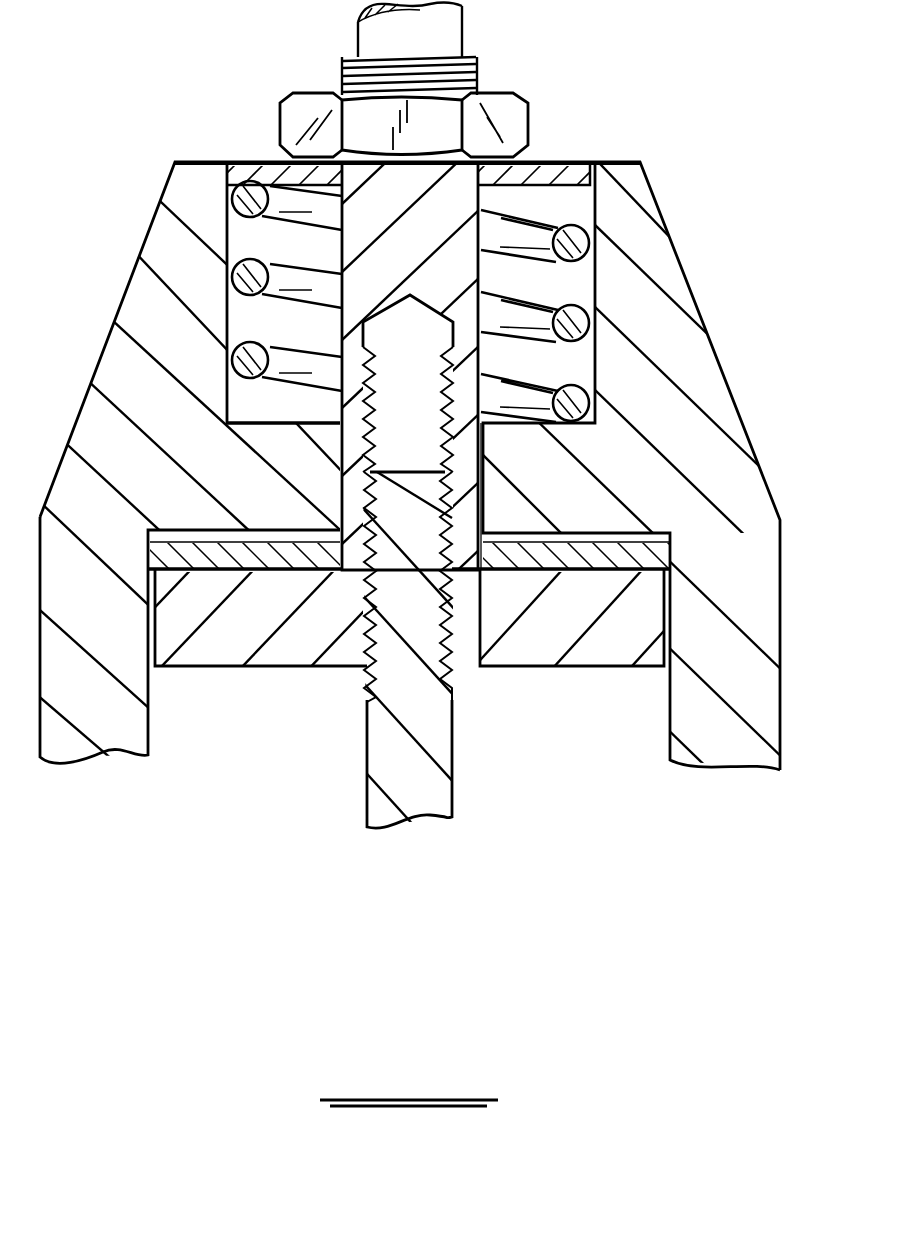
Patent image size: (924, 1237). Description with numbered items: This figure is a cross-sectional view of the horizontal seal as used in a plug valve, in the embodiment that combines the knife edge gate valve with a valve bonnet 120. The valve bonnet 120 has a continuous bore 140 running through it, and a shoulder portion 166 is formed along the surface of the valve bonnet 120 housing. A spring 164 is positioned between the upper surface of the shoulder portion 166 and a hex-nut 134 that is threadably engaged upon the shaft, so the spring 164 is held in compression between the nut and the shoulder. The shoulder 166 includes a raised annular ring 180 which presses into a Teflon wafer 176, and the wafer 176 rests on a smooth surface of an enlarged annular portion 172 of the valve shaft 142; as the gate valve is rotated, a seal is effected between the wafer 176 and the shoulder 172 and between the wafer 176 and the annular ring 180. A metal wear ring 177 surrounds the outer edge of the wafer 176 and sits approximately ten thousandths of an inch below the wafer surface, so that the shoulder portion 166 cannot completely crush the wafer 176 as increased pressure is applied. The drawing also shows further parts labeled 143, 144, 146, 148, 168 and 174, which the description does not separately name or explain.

The valve bonnet 120 is at (667, 330).
The hex-nut 134 is at (308, 107).
The continuous bore 140 is at (247, 317).
The valve shaft 142 is at (463, 193).
The stud 143 is at (413, 730).
The spring 144 is at (233, 225).
The threaded portion 146 is at (370, 597).
The cap plate 148 is at (258, 160).
The spring 164 is at (593, 227).
The shoulder portion 166 is at (270, 447).
The slot 168 is at (490, 473).
The enlarged annular portion 172 is at (202, 608).
The plate 174 is at (617, 575).
The Teflon wafer 176 is at (548, 557).
The metal wear ring 177 is at (635, 545).
The raised annular ring 180 is at (280, 537).